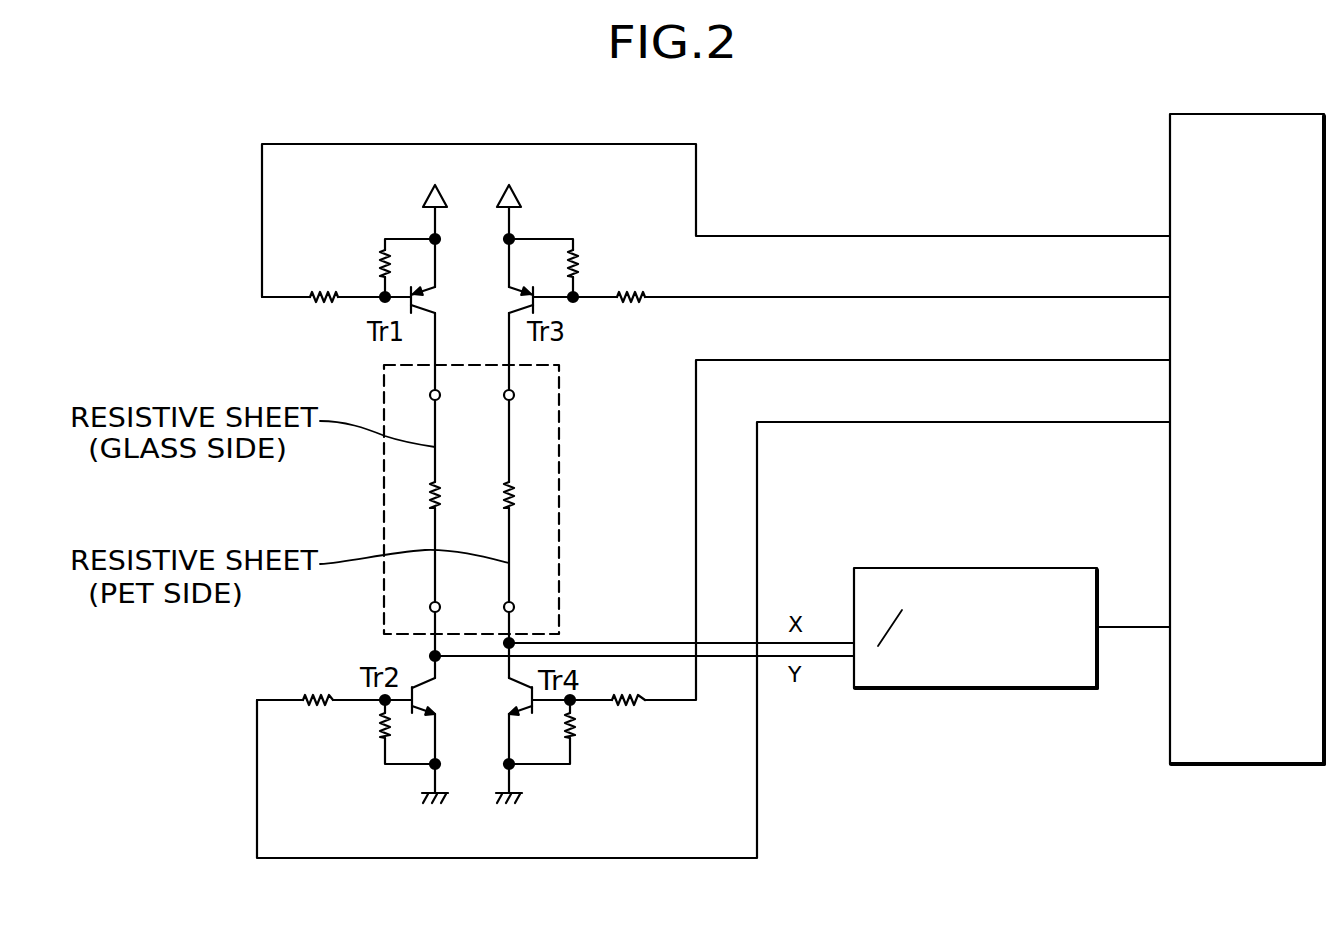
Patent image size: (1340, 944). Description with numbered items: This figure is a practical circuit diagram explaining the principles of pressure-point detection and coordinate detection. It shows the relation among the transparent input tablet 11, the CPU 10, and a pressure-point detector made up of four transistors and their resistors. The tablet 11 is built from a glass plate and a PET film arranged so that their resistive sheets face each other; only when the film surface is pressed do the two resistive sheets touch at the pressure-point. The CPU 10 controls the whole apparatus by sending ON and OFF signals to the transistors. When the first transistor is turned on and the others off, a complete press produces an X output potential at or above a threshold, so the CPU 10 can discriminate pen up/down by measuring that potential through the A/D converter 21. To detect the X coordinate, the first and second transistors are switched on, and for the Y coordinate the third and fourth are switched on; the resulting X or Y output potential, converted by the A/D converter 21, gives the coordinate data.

The CPU 10 is at (1300, 114).
The transparent input tablet 11 is at (559, 423).
The A/D converter 21 is at (1055, 688).